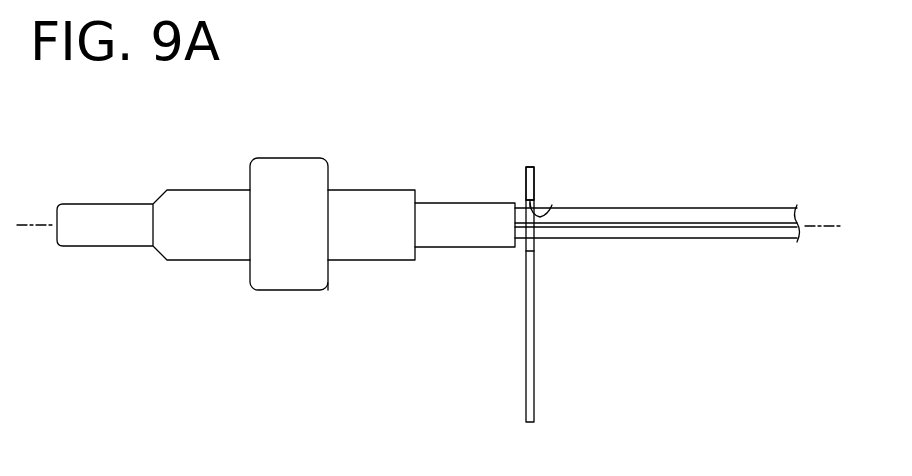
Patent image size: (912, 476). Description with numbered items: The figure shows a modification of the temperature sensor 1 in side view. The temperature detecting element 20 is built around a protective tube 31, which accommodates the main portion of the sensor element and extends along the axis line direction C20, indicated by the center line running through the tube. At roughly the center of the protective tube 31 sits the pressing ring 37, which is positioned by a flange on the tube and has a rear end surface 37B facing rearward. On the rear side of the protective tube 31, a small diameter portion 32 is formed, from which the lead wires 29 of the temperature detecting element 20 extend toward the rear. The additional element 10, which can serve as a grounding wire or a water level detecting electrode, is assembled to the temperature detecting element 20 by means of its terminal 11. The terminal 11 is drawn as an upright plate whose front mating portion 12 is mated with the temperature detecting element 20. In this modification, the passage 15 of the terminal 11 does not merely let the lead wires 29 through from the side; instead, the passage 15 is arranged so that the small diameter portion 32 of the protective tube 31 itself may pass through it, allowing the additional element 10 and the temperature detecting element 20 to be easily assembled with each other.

The temperature sensor 1 is at (420, 148).
The additional element 10 is at (600, 150).
The terminal 11 is at (535, 340).
The mating portion 12 is at (525, 184).
The passage 15 is at (552, 205).
The temperature detecting element 20 is at (367, 148).
The lead wires 29 is at (672, 209).
The protective tube 31 is at (198, 188).
The small diameter portion 32 is at (465, 248).
The pressing ring 37 is at (277, 157).
The rear end surface 37B is at (332, 273).
The axis line direction C20 is at (23, 226).